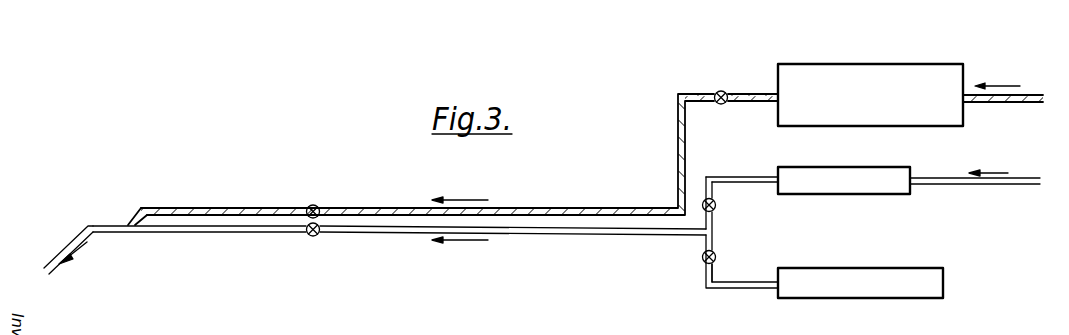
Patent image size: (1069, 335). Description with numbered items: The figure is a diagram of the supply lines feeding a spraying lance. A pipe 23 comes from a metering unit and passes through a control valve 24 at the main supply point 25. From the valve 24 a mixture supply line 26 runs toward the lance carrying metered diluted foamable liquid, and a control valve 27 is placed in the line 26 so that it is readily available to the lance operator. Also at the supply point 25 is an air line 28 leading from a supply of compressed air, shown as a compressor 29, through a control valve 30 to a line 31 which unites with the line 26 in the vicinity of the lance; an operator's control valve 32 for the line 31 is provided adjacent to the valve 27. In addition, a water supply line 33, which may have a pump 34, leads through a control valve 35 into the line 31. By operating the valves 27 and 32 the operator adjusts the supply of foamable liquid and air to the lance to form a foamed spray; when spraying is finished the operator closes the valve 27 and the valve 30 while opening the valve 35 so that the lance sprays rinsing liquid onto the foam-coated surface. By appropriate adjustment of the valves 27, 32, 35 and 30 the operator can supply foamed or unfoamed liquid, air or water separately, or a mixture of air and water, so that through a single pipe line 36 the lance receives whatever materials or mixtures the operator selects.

The pipe 23 is at (1024, 93).
The control valve 24 is at (722, 90).
The main supply point 25 is at (872, 57).
The mixture supply line 26 is at (366, 207).
The control valve 27 is at (313, 204).
The air line 28 is at (760, 280).
The compressor 29 is at (808, 276).
The control valve 30 is at (722, 248).
The line 31 is at (372, 237).
The operator's control valve 32 is at (312, 237).
The water supply line 33 is at (739, 176).
The pump 34 is at (819, 166).
The control valve 35 is at (716, 205).
The pipe line 36 is at (103, 222).